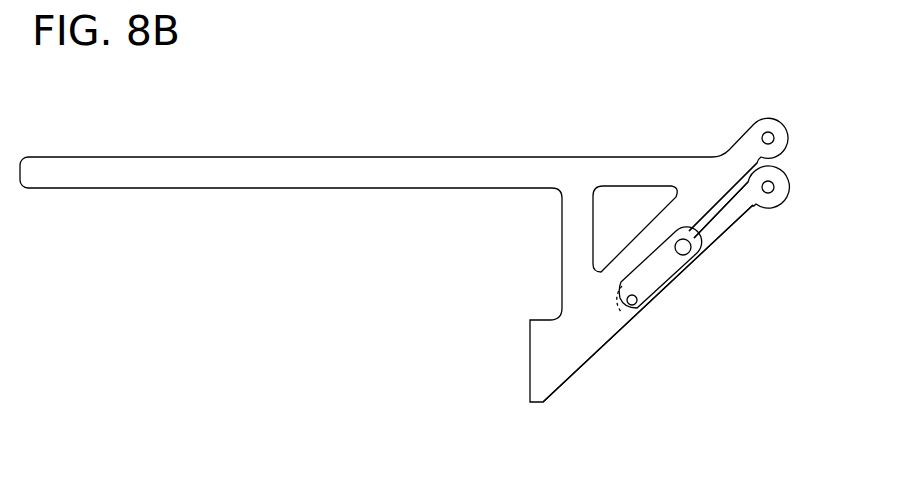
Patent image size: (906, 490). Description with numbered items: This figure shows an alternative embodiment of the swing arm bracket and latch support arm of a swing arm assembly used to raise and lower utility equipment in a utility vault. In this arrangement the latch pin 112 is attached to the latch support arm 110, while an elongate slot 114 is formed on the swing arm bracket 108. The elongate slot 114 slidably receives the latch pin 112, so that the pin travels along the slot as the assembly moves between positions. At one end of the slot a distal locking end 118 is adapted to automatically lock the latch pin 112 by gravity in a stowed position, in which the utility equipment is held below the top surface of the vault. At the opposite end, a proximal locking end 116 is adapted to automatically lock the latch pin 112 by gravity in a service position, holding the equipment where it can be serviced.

The swing arm bracket 108 is at (395, 132).
The latch support arm 110 is at (719, 244).
The latch pin 112 is at (636, 304).
The elongate slot 114 is at (645, 258).
The proximal locking end 116 is at (685, 230).
The distal locking end 118 is at (615, 313).